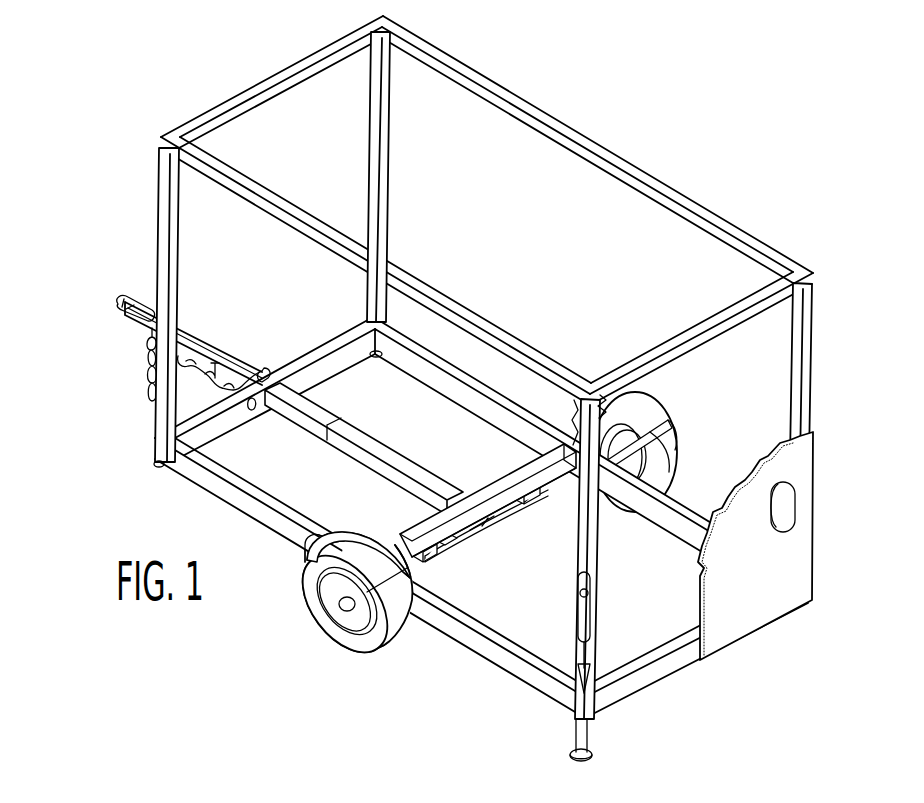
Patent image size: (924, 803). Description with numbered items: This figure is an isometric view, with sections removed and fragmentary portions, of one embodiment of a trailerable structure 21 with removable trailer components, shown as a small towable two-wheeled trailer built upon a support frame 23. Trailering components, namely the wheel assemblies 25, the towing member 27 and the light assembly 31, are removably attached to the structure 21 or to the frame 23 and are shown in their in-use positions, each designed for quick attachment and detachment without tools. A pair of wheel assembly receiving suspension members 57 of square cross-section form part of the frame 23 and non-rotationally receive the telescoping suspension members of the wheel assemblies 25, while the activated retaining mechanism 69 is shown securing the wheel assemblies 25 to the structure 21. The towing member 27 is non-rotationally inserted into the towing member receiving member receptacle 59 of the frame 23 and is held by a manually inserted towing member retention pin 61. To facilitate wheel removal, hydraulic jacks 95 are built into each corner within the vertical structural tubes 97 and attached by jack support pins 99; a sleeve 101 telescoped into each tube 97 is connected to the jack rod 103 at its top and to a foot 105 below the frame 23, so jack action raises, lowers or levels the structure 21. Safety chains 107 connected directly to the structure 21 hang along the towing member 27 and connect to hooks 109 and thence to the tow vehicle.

The structure 21 is at (822, 567).
The support frame 23 is at (216, 500).
The wheel assembly 25 is at (676, 403).
The towing member 27 is at (208, 348).
The light assembly 31 is at (800, 500).
The wheel assembly receiving suspension member 57 is at (535, 460).
The towing member receiving member receptacle 59 is at (317, 411).
The towing member retention pin 61 is at (263, 371).
The retaining mechanism 69 is at (481, 535).
The jack 95 is at (592, 618).
The vertical structural tube 97 is at (597, 552).
The jack support pin 99 is at (579, 593).
The sleeve 101 is at (590, 733).
The jack rod 103 is at (590, 668).
The foot 105 is at (597, 752).
The safety chain 107 is at (148, 377).
The hook 109 is at (148, 333).